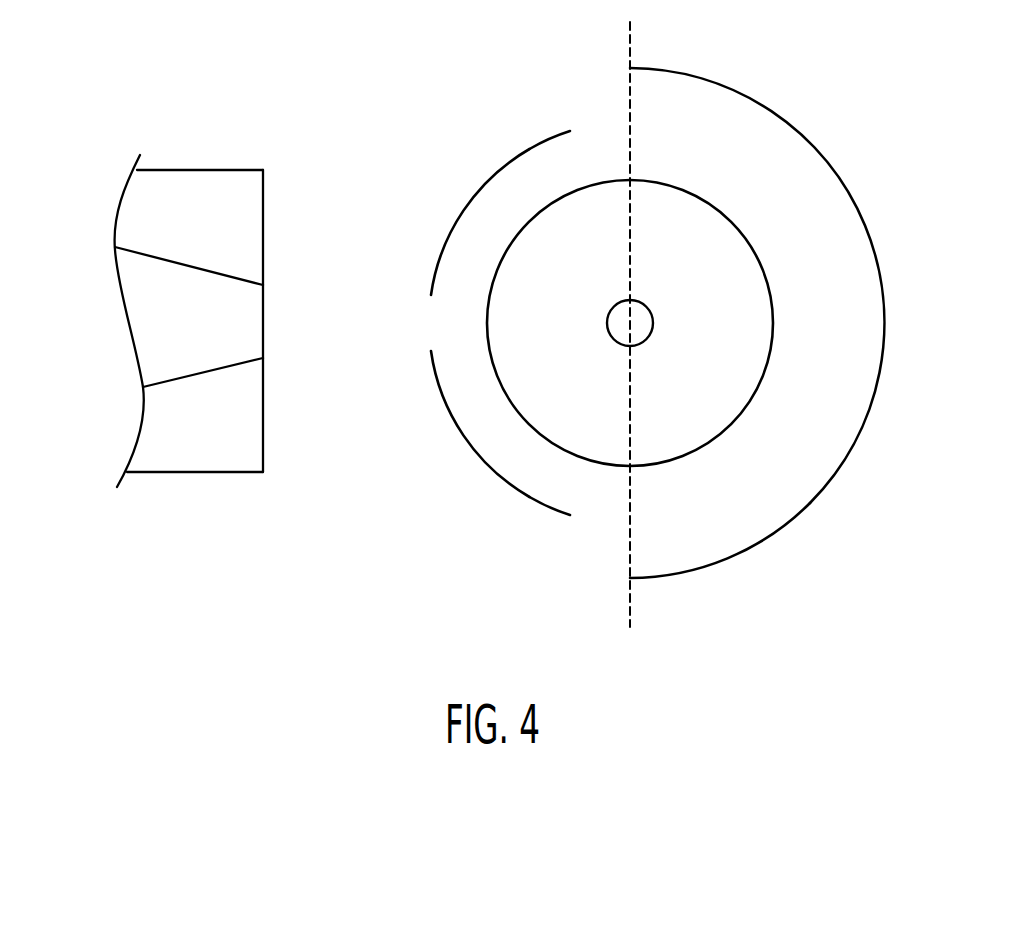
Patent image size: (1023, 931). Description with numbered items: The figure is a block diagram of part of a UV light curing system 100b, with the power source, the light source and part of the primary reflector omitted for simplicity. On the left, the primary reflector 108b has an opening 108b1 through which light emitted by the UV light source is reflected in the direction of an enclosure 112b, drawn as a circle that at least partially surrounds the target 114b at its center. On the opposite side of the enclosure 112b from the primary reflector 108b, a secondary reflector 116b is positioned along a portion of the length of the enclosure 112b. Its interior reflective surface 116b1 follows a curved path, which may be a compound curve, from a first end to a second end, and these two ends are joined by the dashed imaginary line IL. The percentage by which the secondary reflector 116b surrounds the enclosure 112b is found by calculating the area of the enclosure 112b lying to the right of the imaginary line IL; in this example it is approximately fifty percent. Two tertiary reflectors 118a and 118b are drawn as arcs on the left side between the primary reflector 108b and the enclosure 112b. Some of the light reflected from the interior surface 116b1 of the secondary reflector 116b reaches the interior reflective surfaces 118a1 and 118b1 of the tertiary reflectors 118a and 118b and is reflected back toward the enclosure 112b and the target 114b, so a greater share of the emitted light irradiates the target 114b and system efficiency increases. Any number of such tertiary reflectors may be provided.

The UV light curing system 100b is at (313, 582).
The primary reflector 108b is at (187, 188).
The opening 108b1 is at (264, 302).
The enclosure 112b is at (692, 192).
The target 114b is at (652, 323).
The secondary reflector 116b is at (853, 195).
The interior reflective surface 116b1 is at (768, 535).
The tertiary reflector 118a is at (472, 200).
The interior reflective surface 118a1 is at (601, 115).
The tertiary reflector 118b is at (458, 432).
The interior reflective surface 118b1 is at (545, 502).
The imaginary line IL is at (627, 588).